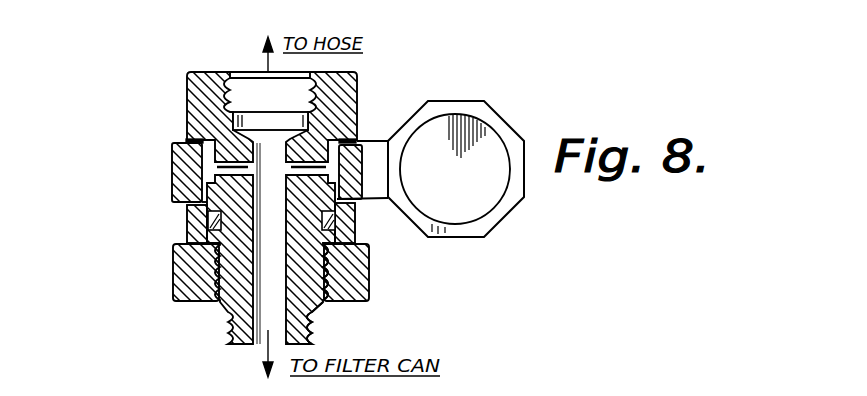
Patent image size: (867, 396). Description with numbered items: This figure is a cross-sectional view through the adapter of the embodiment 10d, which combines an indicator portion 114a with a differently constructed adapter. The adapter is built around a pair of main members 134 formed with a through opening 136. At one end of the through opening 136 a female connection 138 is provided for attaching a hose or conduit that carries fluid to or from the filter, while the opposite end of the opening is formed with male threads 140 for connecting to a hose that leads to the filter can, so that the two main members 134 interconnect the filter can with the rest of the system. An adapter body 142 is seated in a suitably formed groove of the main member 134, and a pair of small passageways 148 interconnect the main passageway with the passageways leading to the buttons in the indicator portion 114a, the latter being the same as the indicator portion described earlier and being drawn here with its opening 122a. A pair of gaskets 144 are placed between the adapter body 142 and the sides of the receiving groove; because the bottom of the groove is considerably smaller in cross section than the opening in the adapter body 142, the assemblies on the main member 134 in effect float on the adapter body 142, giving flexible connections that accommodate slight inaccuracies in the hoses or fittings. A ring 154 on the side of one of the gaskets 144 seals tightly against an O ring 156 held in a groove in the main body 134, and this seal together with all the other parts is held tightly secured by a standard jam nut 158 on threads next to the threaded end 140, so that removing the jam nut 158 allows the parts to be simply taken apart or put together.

The embodiment 10d is at (183, 90).
The female connection 138 is at (306, 76).
The small passageways 148 is at (234, 116).
The adapter body 142 is at (364, 141).
The gaskets 144 is at (182, 141).
The ring 154 is at (208, 221).
The O ring 156 is at (338, 222).
The jam nut 158 is at (174, 281).
The main members 134 is at (320, 284).
The male threads 140 is at (312, 331).
The through opening 136 is at (262, 349).
The indicator portion 114a is at (470, 101).
The opening 122a is at (480, 133).